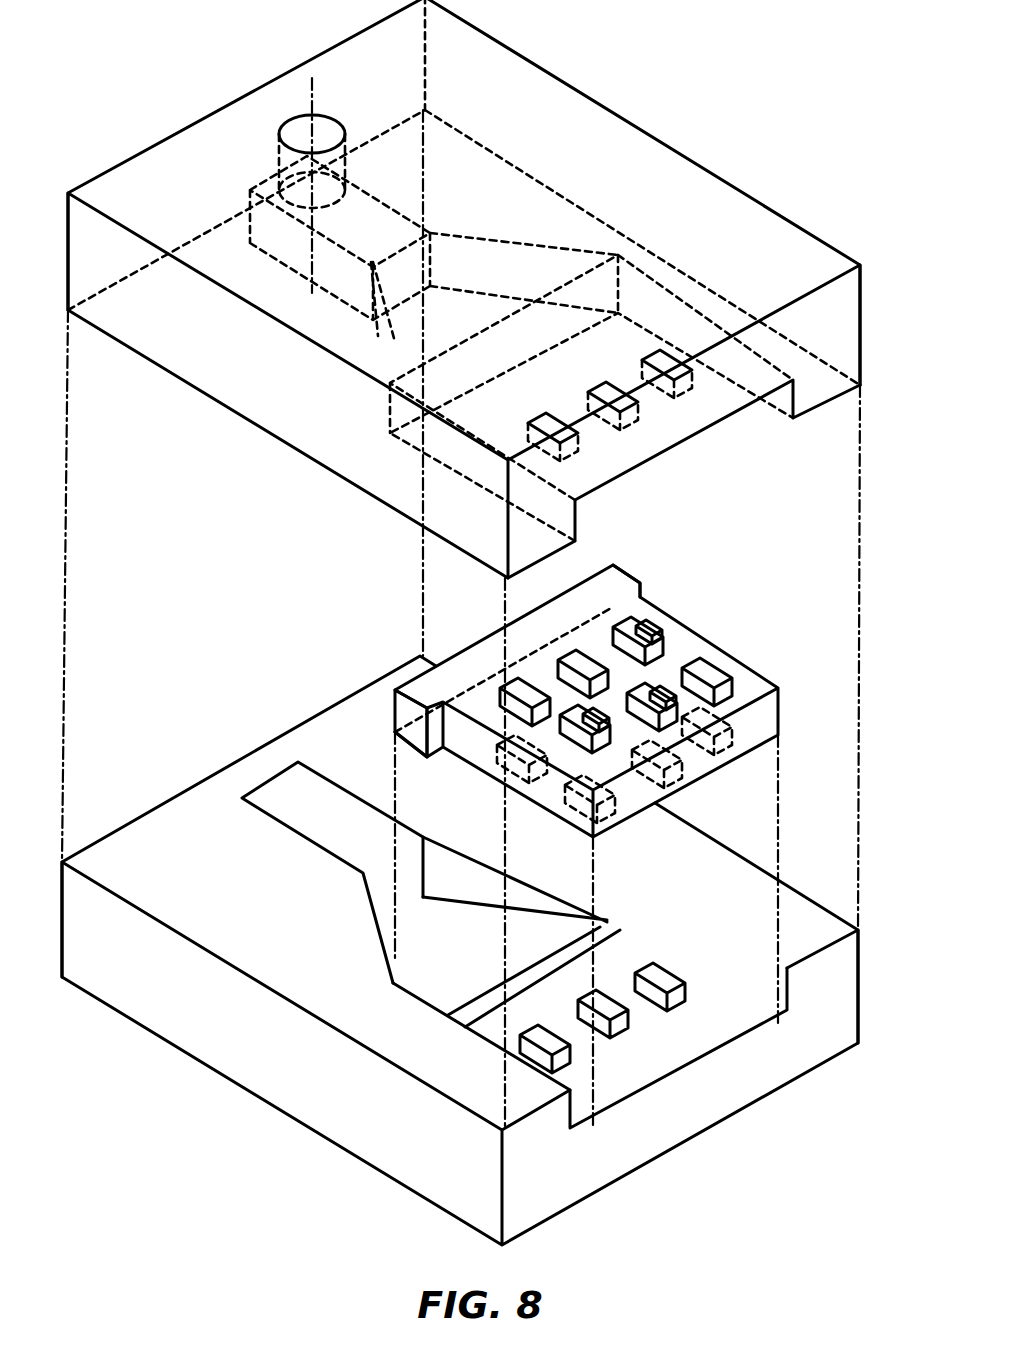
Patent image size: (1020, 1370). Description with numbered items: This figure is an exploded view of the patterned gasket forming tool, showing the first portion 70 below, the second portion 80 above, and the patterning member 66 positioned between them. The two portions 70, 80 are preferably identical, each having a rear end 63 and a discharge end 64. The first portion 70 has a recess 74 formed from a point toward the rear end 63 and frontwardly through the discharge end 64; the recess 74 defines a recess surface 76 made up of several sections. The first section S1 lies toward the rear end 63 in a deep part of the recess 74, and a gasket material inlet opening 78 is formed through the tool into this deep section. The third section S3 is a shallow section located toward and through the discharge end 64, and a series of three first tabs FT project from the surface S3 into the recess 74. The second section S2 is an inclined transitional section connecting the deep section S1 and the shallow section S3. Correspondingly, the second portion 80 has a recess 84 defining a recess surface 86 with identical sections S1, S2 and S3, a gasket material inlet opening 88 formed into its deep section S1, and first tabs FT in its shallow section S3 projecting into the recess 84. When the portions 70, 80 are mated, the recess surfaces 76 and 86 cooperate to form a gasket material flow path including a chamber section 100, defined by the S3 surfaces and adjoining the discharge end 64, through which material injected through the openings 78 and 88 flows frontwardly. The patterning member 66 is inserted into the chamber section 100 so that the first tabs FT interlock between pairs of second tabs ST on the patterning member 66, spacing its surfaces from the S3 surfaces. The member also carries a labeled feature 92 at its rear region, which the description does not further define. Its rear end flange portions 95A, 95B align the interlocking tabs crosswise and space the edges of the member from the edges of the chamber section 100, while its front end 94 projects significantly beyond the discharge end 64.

The second portion 80 is at (632, 113).
The first portion 70 is at (226, 1086).
The patterning member 66 is at (705, 621).
The rear end 63 is at (181, 133).
The discharge end 64 is at (843, 328).
The gasket material inlet opening 88 is at (293, 126).
The recess 84 is at (385, 241).
The recess surface 86 is at (690, 440).
The first section S1 is at (452, 300).
The second section S2 is at (473, 373).
The third section S3 is at (670, 317).
The first tabs FT is at (612, 398).
The second tabs ST is at (520, 690).
The chamber section 100 is at (748, 403).
The tape 92 is at (468, 650).
The front end 94 is at (770, 713).
The rear end flange portion 95A is at (622, 584).
The rear end flange portion 95B is at (403, 713).
The recess 74 is at (334, 823).
The gasket material inlet opening 78 is at (307, 840).
The recess surface 76 is at (715, 1024).